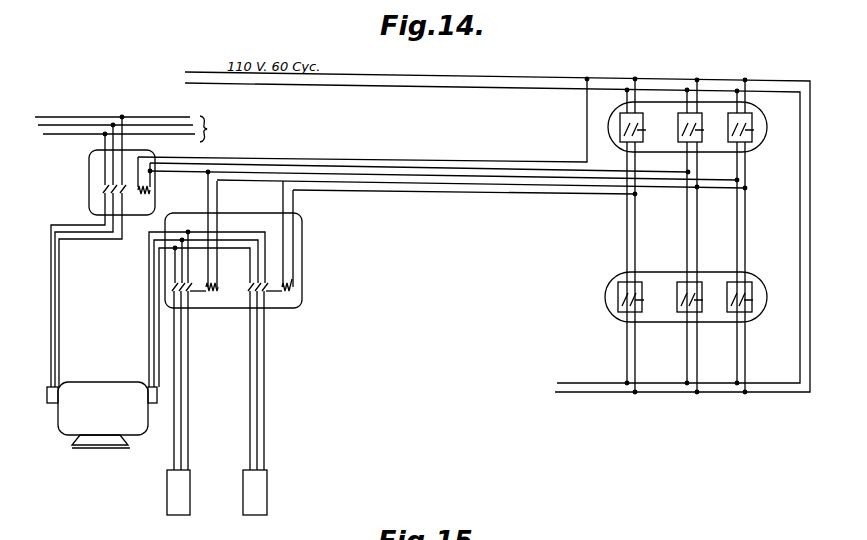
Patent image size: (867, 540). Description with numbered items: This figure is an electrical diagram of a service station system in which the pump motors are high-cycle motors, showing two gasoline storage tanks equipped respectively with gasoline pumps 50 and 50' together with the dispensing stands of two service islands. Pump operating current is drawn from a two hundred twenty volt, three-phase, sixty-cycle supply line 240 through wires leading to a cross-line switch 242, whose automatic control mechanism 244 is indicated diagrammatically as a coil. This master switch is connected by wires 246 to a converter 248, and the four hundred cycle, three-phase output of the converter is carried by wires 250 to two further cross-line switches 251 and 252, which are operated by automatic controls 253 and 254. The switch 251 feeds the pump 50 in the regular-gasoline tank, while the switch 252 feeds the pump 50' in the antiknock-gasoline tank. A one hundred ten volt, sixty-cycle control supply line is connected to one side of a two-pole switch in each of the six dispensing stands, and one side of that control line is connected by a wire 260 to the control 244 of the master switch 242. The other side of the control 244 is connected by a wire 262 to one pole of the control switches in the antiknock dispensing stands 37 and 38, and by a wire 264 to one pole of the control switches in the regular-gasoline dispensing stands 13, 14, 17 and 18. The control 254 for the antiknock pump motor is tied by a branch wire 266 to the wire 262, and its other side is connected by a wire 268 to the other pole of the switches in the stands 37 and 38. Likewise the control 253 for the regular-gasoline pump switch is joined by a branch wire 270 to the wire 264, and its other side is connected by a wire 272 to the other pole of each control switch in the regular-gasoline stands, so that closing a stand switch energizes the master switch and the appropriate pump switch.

The supply line 240 is at (137, 121).
The cross-line switch 242 is at (105, 192).
The automatic control mechanism 244 is at (152, 190).
The wires 246 is at (55, 326).
The converter 248 is at (102, 415).
The wires 250 is at (149, 363).
The cross-line switch 251 is at (190, 295).
The cross-line switch 252 is at (268, 294).
The automatic control 253 is at (222, 294).
The automatic control 254 is at (298, 290).
The wire 260 is at (388, 161).
The wire 262 is at (420, 168).
The wire 264 is at (455, 175).
The branch wire 266 is at (280, 200).
The wire 268 is at (427, 192).
The branch wire 270 is at (205, 205).
The wire 272 is at (483, 187).
The regular-gasoline dispensing stand 13 is at (644, 116).
The antiknock dispensing stand 37 is at (702, 116).
The regular-gasoline dispensing stand 14 is at (760, 117).
The regular-gasoline dispensing stand 17 is at (643, 286).
The antiknock dispensing stand 38 is at (702, 286).
The regular-gasoline dispensing stand 18 is at (758, 286).
The gasoline pump 50 is at (139, 504).
The gasoline pump 50' is at (300, 505).